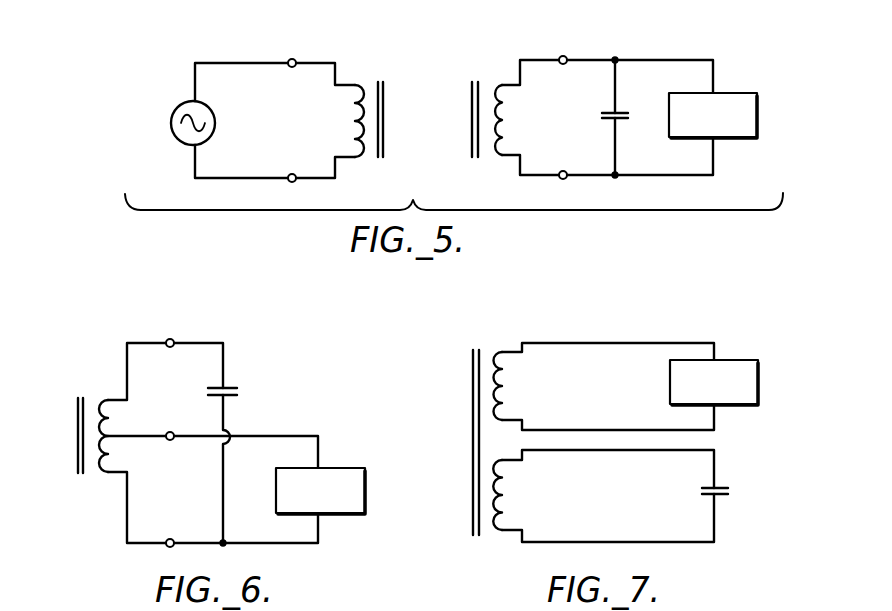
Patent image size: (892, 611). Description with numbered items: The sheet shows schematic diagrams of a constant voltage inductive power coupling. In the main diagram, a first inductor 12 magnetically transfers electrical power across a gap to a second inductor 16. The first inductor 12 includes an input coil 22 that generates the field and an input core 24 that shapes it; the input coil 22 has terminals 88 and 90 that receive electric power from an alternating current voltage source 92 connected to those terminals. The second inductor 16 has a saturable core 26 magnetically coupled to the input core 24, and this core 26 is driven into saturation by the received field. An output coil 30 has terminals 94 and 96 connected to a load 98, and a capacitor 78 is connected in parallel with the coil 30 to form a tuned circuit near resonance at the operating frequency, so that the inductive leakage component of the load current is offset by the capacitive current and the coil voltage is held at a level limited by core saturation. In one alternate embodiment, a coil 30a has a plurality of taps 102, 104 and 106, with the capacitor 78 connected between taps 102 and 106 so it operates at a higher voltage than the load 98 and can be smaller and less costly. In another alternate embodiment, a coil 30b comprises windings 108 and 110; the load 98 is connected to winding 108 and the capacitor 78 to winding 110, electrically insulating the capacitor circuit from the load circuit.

In FIG. 5, the first inductor 12 is at (327, 45).
In FIG. 5, the second inductor 16 is at (533, 50).
In FIG. 5, the input coil 22 is at (352, 85).
In FIG. 5, the input core 24 is at (385, 145).
In FIG. 5, the saturable core 26 is at (468, 150).
In FIG. 5, the output coil 30 is at (502, 85).
In FIG. 6, the coil having a plurality of taps 30a is at (108, 400).
In FIG. 7, the coil comprising a plurality of windings 30b is at (500, 352).
In FIG. 5, the capacitor 78 is at (610, 113).
In FIG. 6, the capacitor 78 is at (231, 388).
In FIG. 7, the capacitor 78 is at (719, 490).
In FIG. 5, the terminal 88 is at (289, 58).
In FIG. 5, the terminal 90 is at (291, 173).
In FIG. 5, the alternating current voltage source 92 is at (177, 106).
In FIG. 5, the terminal 94 is at (566, 57).
In FIG. 5, the terminal 96 is at (566, 172).
In FIG. 5, the load 98 is at (736, 93).
In FIG. 6, the load 98 is at (348, 468).
In FIG. 7, the load 98 is at (736, 358).
In FIG. 6, the tap 102 is at (173, 340).
In FIG. 6, the tap 104 is at (171, 432).
In FIG. 6, the tap 106 is at (170, 539).
In FIG. 7, the winding 108 is at (505, 385).
In FIG. 7, the winding 110 is at (505, 494).